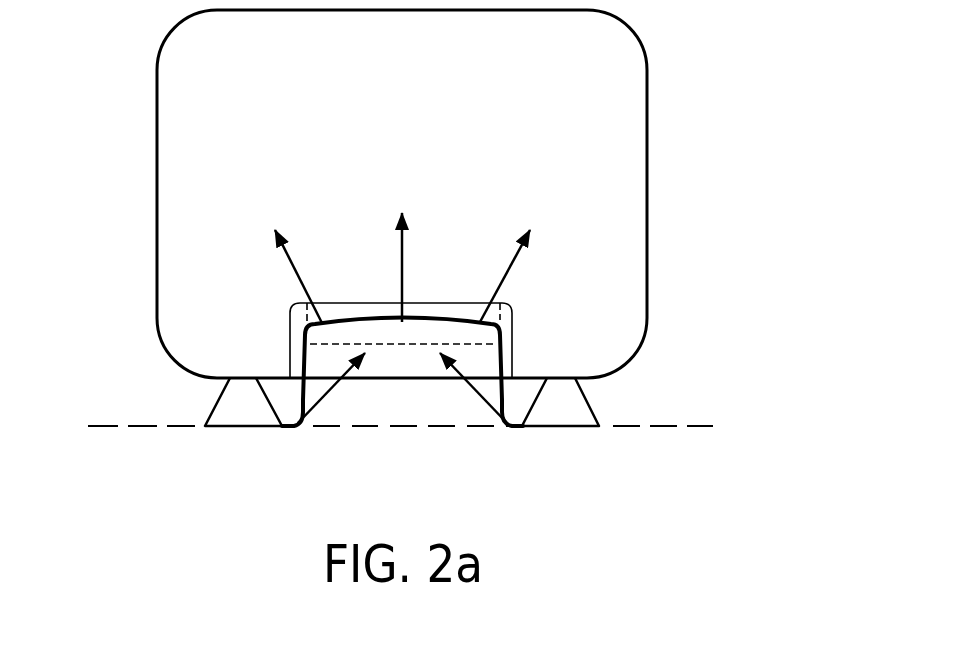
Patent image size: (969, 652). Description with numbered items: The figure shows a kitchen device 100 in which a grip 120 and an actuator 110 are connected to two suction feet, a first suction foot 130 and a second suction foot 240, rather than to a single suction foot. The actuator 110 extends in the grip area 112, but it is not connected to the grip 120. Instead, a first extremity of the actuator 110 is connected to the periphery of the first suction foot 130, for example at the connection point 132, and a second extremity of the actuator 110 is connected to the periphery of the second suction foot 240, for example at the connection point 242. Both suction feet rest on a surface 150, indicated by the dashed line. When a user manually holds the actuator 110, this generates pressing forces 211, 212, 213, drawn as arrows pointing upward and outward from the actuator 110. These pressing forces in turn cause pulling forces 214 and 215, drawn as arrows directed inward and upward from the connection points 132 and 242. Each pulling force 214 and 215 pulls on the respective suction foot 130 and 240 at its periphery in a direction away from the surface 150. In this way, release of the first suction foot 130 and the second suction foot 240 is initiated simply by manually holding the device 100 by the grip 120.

The kitchen device 100 is at (647, 100).
The actuator 110 is at (359, 308).
The grip area 112 is at (503, 322).
The grip 120 is at (515, 362).
The first suction foot 130 is at (243, 418).
The connection point 132 is at (298, 428).
The surface 150 is at (103, 425).
The pressing force 211 is at (292, 268).
The pressing force 212 is at (405, 270).
The pressing force 213 is at (513, 267).
The pulling force 214 is at (323, 402).
The pulling force 215 is at (480, 400).
The second suction foot 240 is at (562, 418).
The connection point 242 is at (507, 428).